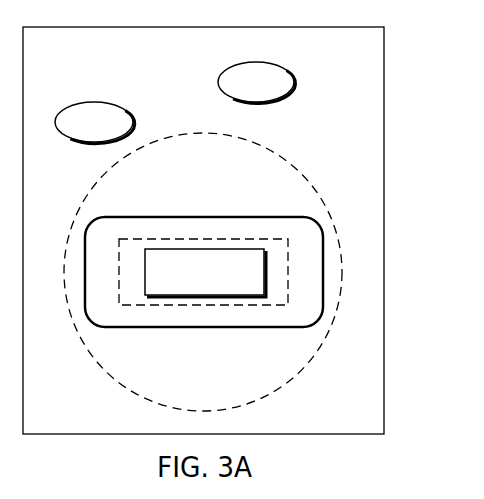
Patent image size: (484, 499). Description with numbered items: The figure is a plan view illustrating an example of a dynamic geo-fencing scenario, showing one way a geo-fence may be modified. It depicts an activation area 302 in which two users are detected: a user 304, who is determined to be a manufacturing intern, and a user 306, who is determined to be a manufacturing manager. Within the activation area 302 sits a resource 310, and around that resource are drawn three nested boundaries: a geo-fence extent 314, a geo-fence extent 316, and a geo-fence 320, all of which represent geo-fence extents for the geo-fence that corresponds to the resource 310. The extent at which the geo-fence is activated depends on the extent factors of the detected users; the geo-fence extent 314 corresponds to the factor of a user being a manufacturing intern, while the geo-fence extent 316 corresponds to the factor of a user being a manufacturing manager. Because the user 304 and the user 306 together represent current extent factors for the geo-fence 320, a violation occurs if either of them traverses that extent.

The activation area 302 is at (383, 116).
The user 304 is at (112, 102).
The user 306 is at (273, 62).
The resource 310 is at (190, 290).
The geo-fence extent 314 is at (283, 383).
The geo-fence extent 316 is at (230, 305).
The geo-fence 320 is at (190, 327).